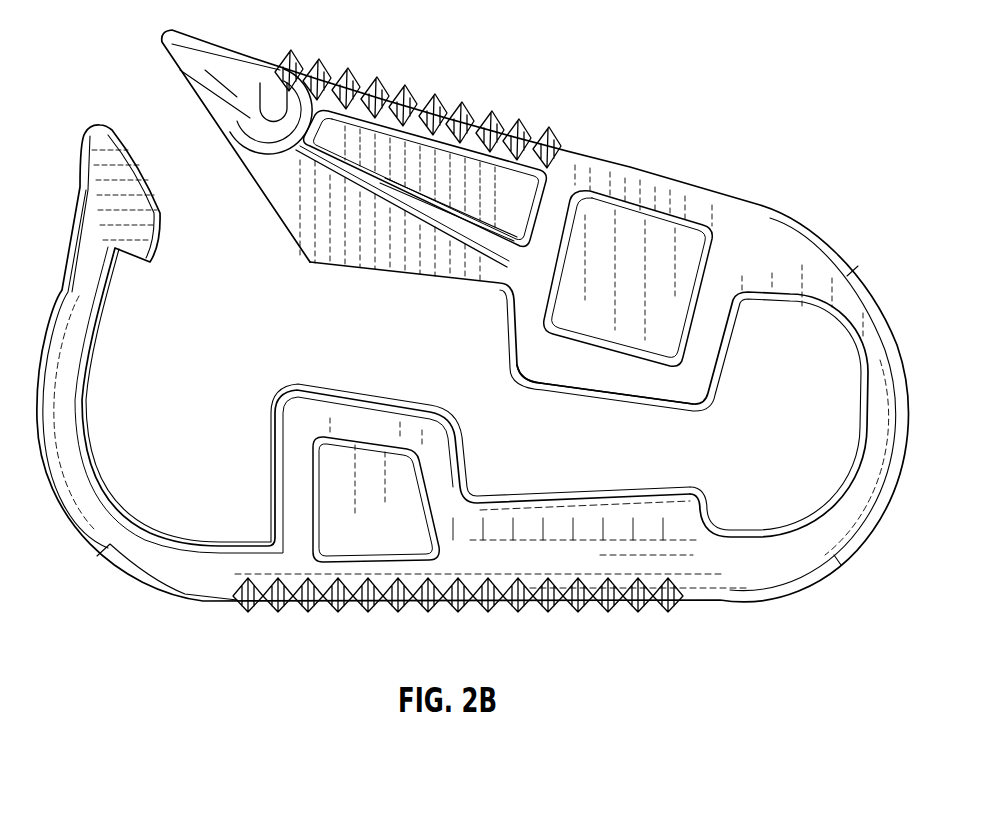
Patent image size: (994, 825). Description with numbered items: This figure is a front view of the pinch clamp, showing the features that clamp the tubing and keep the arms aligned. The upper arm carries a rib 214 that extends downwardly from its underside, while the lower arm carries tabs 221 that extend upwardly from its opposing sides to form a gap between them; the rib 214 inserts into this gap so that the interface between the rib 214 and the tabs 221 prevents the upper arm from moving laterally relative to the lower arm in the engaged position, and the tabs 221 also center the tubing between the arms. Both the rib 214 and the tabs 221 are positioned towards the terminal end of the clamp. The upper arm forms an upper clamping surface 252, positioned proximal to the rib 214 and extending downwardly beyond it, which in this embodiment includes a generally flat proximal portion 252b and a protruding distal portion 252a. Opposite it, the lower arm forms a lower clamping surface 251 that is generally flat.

The rib 214 is at (340, 268).
The tabs 221 is at (363, 520).
The lower clamping surface 251 is at (653, 517).
The upper clamping surface 252 is at (717, 377).
The protruding distal portion 252a is at (538, 365).
The proximal portion 252b is at (664, 406).